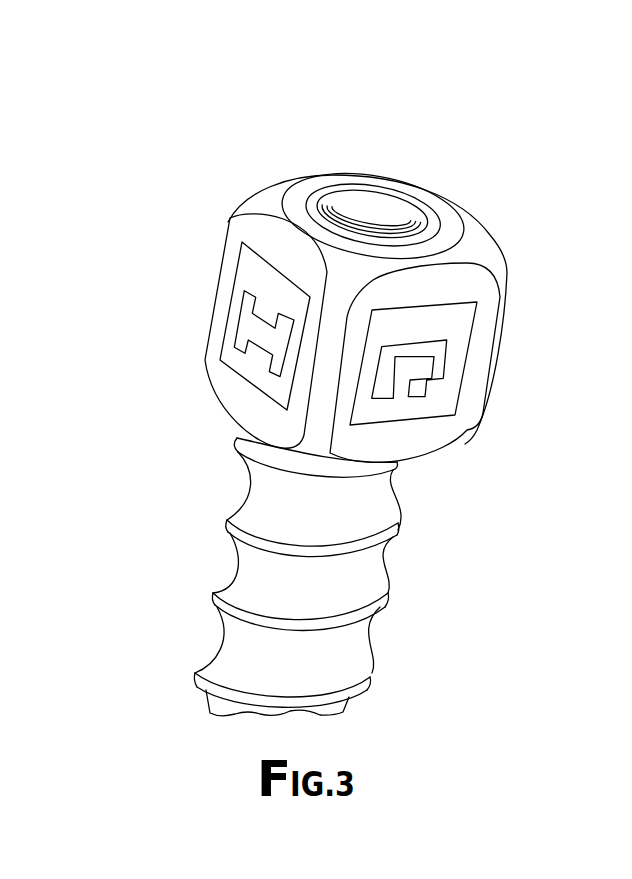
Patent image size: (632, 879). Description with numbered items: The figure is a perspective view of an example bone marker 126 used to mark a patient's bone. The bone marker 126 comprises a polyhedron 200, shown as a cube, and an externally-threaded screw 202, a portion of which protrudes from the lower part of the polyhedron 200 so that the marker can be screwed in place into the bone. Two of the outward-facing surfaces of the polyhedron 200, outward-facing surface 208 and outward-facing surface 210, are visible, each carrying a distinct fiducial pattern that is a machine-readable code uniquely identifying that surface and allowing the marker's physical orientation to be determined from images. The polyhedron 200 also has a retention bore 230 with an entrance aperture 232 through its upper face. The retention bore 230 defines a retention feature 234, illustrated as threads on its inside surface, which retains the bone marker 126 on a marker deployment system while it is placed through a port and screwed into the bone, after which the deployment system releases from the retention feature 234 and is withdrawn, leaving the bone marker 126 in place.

The bone marker 126 is at (125, 124).
The polyhedron 200 is at (245, 178).
The externally-threaded screw 202 is at (193, 607).
The outward-facing surface 208 is at (238, 227).
The outward-facing surface 210 is at (473, 283).
The retention bore 230 is at (377, 230).
The entrance aperture 232 is at (437, 223).
The retention feature 234 is at (347, 227).